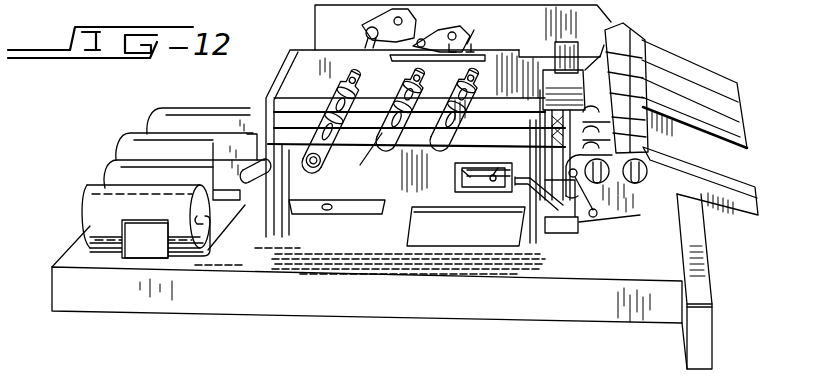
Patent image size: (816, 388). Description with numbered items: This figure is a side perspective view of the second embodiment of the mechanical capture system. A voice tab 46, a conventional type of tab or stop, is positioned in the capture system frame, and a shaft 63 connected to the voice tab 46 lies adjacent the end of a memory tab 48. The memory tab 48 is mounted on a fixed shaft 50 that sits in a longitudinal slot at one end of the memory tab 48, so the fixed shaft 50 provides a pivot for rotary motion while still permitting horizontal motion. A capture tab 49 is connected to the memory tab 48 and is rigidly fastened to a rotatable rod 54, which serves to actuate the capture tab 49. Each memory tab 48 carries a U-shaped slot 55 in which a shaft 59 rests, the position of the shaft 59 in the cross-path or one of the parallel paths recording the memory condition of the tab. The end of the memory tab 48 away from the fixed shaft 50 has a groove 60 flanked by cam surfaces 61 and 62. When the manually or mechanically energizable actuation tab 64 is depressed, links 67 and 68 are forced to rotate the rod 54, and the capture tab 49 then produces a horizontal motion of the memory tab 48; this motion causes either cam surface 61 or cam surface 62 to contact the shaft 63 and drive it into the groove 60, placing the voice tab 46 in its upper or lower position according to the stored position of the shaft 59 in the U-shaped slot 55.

The voice tab 46 is at (740, 182).
The memory tab 48 is at (412, 160).
The capture tab 49 is at (322, 153).
The fixed shaft 50 is at (247, 183).
The rotatable rod 54 is at (372, 33).
The U-shaped slot 55 is at (457, 192).
The shaft 59 is at (493, 181).
The groove 60 is at (530, 200).
The cam surface 61 is at (545, 162).
The cam surface 62 is at (568, 222).
The shaft 63 is at (575, 178).
The actuation tab 64 is at (728, 88).
The link 67 is at (460, 38).
The link 68 is at (385, 45).